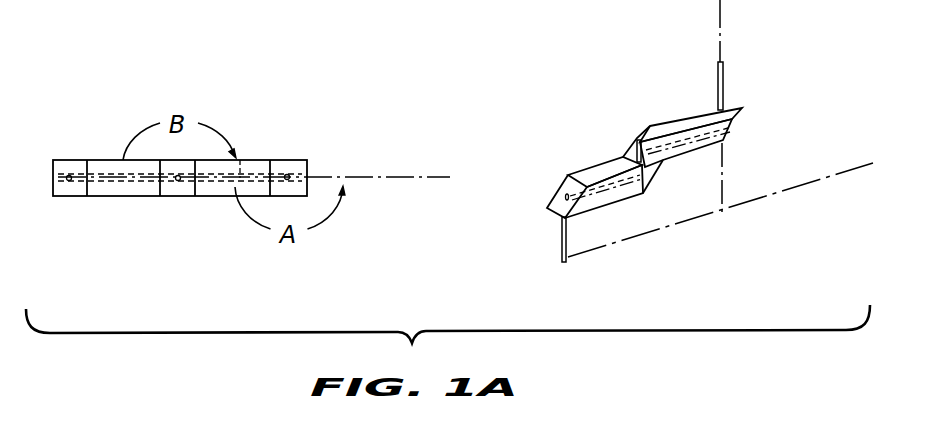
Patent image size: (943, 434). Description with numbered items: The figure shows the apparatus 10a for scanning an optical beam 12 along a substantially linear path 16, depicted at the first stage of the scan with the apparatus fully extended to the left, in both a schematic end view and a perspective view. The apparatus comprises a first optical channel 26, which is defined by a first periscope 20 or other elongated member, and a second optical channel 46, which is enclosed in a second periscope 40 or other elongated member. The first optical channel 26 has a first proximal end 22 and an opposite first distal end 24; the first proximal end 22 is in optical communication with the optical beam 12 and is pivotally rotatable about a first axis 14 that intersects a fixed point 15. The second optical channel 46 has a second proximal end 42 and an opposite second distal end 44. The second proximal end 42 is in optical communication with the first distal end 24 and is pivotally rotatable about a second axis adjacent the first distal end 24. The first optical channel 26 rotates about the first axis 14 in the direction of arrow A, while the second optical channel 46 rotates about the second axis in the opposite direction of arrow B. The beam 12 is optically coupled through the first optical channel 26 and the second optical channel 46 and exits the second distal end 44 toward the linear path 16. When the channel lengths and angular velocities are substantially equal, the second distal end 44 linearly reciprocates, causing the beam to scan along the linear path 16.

The apparatus 10a is at (297, 62).
The optical beam 12 is at (724, 80).
The first axis 14 is at (730, 150).
The fixed point 15 is at (290, 176).
The linear path 16 is at (397, 178).
The first periscope 20 is at (285, 158).
The first proximal end 22 is at (742, 125).
The first distal end 24 is at (178, 180).
The first optical channel 26 is at (240, 160).
The second periscope 40 is at (123, 160).
The second proximal end 42 is at (637, 175).
The second distal end 44 is at (67, 178).
The second optical channel 46 is at (108, 180).